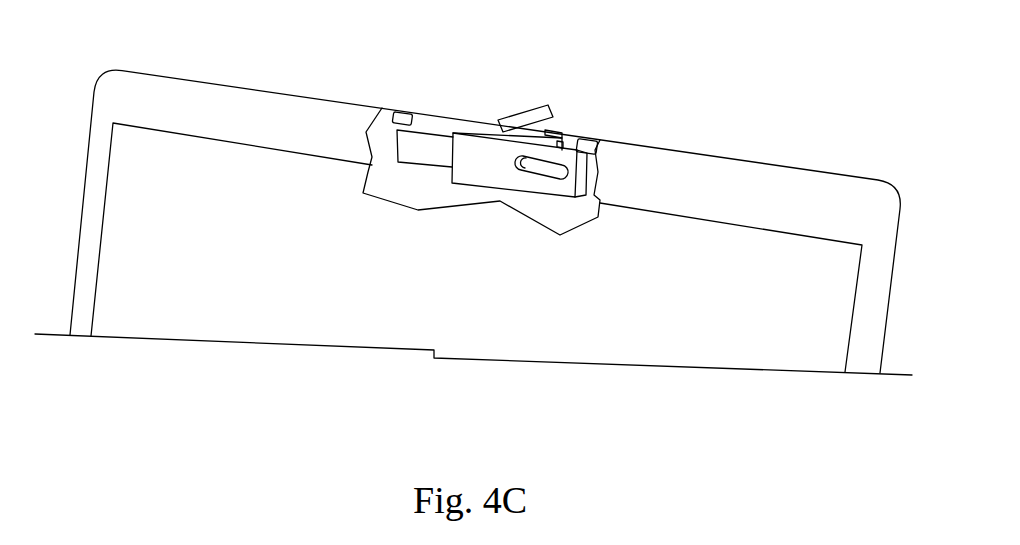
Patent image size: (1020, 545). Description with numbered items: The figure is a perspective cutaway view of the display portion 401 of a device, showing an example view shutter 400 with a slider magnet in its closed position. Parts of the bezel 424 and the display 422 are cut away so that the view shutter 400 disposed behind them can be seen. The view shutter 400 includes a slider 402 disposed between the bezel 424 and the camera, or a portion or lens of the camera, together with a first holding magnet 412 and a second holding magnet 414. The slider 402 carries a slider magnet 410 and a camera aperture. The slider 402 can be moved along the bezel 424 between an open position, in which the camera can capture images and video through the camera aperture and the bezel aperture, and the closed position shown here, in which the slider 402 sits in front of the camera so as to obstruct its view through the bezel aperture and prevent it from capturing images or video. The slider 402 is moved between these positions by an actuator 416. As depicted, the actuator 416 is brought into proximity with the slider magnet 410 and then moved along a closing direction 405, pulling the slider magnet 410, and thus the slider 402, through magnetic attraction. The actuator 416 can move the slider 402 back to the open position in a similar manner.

The view shutter 400 is at (383, 214).
The display portion 401 is at (473, 212).
The slider 402 is at (497, 172).
The closing direction 405 is at (487, 152).
The slider magnet 410 is at (552, 137).
The first holding magnet 412 is at (397, 117).
The second holding magnet 414 is at (600, 140).
The actuator 416 is at (538, 112).
The display 422 is at (240, 170).
The bezel 424 is at (787, 183).